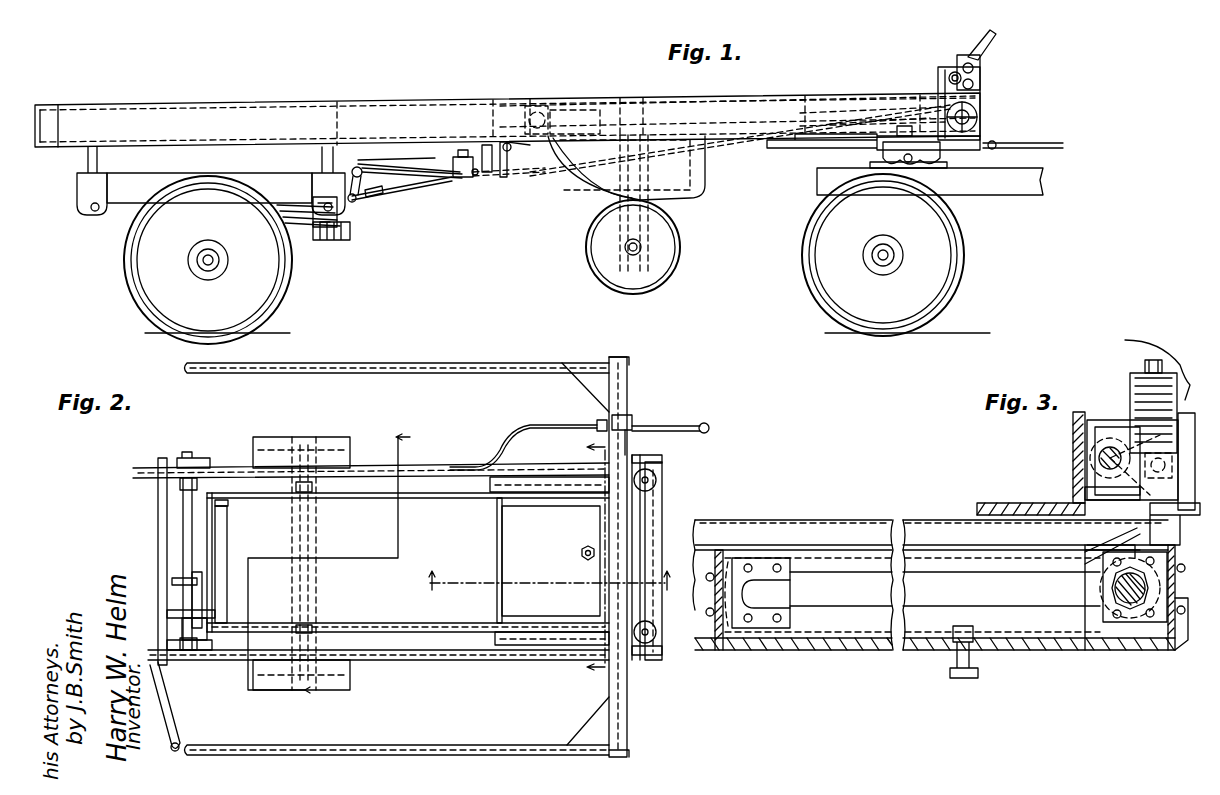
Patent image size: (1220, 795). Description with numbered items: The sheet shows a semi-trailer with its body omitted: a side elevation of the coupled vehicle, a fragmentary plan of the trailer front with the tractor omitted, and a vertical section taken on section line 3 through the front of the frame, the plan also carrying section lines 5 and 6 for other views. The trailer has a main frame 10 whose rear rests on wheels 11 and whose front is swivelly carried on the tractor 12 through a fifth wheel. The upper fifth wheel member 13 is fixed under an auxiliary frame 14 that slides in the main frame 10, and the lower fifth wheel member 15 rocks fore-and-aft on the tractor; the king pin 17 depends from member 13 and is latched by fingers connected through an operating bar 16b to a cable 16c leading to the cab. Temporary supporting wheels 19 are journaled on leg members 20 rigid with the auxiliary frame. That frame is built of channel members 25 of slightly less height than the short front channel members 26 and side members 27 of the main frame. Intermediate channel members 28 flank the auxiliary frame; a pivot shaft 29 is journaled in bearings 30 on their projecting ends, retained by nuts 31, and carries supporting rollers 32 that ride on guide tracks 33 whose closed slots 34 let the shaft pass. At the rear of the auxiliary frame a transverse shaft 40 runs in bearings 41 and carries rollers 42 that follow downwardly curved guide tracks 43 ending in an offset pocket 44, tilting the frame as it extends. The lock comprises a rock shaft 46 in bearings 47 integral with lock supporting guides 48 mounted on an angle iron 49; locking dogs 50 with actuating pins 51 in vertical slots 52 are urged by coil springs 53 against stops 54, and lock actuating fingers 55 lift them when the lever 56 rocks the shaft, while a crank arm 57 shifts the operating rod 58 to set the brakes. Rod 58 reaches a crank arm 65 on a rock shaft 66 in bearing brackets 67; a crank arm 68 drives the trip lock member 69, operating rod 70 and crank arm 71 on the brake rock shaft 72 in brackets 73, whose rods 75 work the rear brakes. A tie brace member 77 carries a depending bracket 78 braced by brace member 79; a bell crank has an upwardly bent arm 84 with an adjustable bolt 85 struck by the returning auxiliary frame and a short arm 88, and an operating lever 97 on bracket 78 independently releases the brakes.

In FIG. 2, the section line 3— 3 is at (545, 592).
In FIG. 2, the section line 5- 5 is at (344, 566).
In FIG. 2, the section line 6- 6 is at (585, 556).
In FIG. 1, the main frame 10 is at (430, 112).
In FIG. 2, the main frame 10 is at (495, 368).
In FIG. 1, the wheels 11 is at (265, 265).
In FIG. 1, the tractor 12 is at (955, 185).
In FIG. 1, the upper fifth wheel member 13 is at (980, 125).
In FIG. 2, the upper fifth wheel member 13 is at (510, 560).
In FIG. 3, the upper fifth wheel member 13 is at (1025, 652).
In FIG. 1, the auxiliary frame 14 is at (768, 120).
In FIG. 2, the auxiliary frame 14 is at (510, 513).
In FIG. 3, the auxiliary frame 14 is at (708, 640).
In FIG. 1, the lower fifth wheel member 15 is at (975, 138).
In FIG. 1, the operating bar 16b is at (1000, 143).
In FIG. 1, the cable 16c is at (1040, 150).
In FIG. 1, the king pin 17 is at (850, 150).
In FIG. 2, the king pin 17 is at (590, 545).
In FIG. 3, the king pin 17 is at (953, 665).
In FIG. 1, the wheels 19 is at (590, 236).
In FIG. 2, the wheels 19 is at (345, 440).
In FIG. 1, the leg members 20 is at (618, 200).
In FIG. 2, the leg members 20 is at (315, 623).
In FIG. 2, the channel members 25 is at (212, 552).
In FIG. 3, the channel members 25 is at (712, 570).
In FIG. 2, the short channel members 26 is at (627, 385).
In FIG. 3, the short channel members 26 is at (1108, 652).
In FIG. 1, the side members 27 is at (320, 112).
In FIG. 2, the side members 27 is at (520, 363).
In FIG. 2, the intermediate channel members 28 is at (452, 470).
In FIG. 1, the pivot shaft 29 is at (977, 110).
In FIG. 3, the pivot shaft 29 is at (1185, 652).
In FIG. 2, the bearings 30 is at (655, 473).
In FIG. 2, the nuts 31 is at (662, 457).
In FIG. 3, the supporting rollers 32 is at (1112, 600).
In FIG. 1, the guide tracks 33 is at (860, 118).
In FIG. 2, the guide tracks 33 is at (525, 478).
In FIG. 3, the guide tracks 33 is at (757, 558).
In FIG. 1, the closed slots 34 is at (840, 125).
In FIG. 3, the closed slots 34 is at (832, 590).
In FIG. 1, the transverse shaft 40 is at (545, 118).
In FIG. 2, the transverse shaft 40 is at (228, 540).
In FIG. 2, the bearings 41 is at (228, 504).
In FIG. 1, the rollers 42 is at (520, 173).
In FIG. 2, the rollers 42 is at (200, 480).
In FIG. 1, the guide tracks 43 is at (590, 180).
In FIG. 2, the guide tracks 43 is at (270, 462).
In FIG. 1, the offset pocket 44 is at (700, 195).
In FIG. 1, the rock shaft 46 is at (985, 70).
In FIG. 2, the rock shaft 46 is at (645, 518).
In FIG. 3, the rock shaft 46 is at (1110, 430).
In FIG. 3, the bearings 47 is at (1100, 450).
In FIG. 1, the lock supporting guides 48 is at (983, 60).
In FIG. 3, the lock supporting guides 48 is at (1178, 465).
In FIG. 2, the angle iron 49 is at (608, 568).
In FIG. 3, the angle iron 49 is at (1073, 458).
In FIG. 3, the locking dogs 50 is at (1180, 525).
In FIG. 1, the actuating pin 51 is at (985, 72).
In FIG. 3, the actuating pin 51 is at (1178, 443).
In FIG. 1, the vertical slot 52 is at (957, 65).
In FIG. 3, the vertical slot 52 is at (1150, 460).
In FIG. 3, the coil springs 53 is at (1140, 385).
In FIG. 3, the stops 54 is at (1090, 545).
In FIG. 1, the lock actuating fingers 55 is at (978, 86).
In FIG. 3, the lock actuating fingers 55 is at (1085, 490).
In FIG. 1, the lever 56 is at (980, 38).
In FIG. 2, the lever 56 is at (680, 426).
In FIG. 3, the lever 56 is at (1130, 342).
In FIG. 2, the crank arm 57 is at (632, 418).
In FIG. 3, the crank arm 57 is at (1060, 503).
In FIG. 1, the operating rod 58 is at (712, 136).
In FIG. 2, the operating rod 58 is at (548, 424).
In FIG. 1, the crank arm 65 is at (503, 178).
In FIG. 2, the crank arm 65 is at (195, 455).
In FIG. 1, the rock shaft 66 is at (508, 142).
In FIG. 2, the rock shaft 66 is at (185, 508).
In FIG. 1, the bearing brackets 67 is at (507, 178).
In FIG. 2, the crank arm 68 is at (207, 625).
In FIG. 1, the trip lock member 69 is at (474, 176).
In FIG. 1, the operating rod 70 is at (402, 190).
In FIG. 1, the crank arm 71 is at (354, 203).
In FIG. 1, the brake rock shaft 72 is at (360, 160).
In FIG. 1, the brackets 73 is at (366, 183).
In FIG. 1, the rods 75 is at (290, 205).
In FIG. 1, the tie brace member 77 is at (510, 140).
In FIG. 2, the tie brace member 77 is at (160, 530).
In FIG. 1, the depending bracket 78 is at (482, 150).
In FIG. 1, the brace member 79 is at (400, 166).
In FIG. 2, the upwardly bent arm 84 is at (204, 600).
In FIG. 2, the bolt 85 is at (182, 578).
In FIG. 2, the short arm 88 is at (178, 650).
In FIG. 1, the operating lever 97 is at (455, 165).
In FIG. 2, the operating lever 97 is at (172, 715).